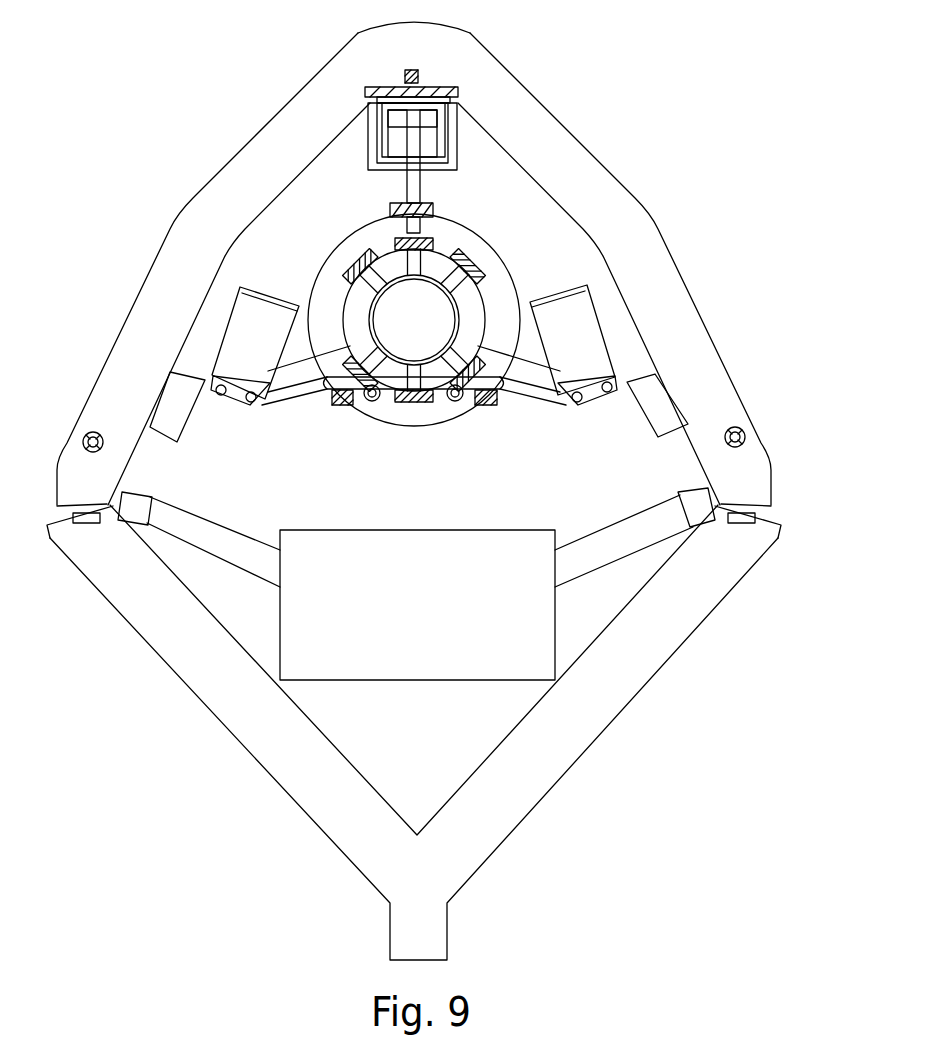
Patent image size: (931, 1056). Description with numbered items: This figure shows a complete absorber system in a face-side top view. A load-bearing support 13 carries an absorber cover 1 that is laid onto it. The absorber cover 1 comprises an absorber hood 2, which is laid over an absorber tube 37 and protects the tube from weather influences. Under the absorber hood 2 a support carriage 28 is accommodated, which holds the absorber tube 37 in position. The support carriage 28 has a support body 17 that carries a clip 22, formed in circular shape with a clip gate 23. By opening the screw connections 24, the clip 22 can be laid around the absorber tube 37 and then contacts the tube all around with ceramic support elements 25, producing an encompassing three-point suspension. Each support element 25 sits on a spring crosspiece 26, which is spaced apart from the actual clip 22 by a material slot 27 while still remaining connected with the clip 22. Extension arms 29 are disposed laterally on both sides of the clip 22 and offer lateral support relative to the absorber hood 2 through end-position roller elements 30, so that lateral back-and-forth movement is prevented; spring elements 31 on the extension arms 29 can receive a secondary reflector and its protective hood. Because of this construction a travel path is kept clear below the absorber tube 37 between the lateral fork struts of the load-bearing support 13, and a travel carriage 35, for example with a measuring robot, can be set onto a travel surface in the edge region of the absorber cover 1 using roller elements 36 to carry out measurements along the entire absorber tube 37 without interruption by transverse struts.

The absorber cover 1 is at (677, 295).
The absorber hood 2 is at (555, 213).
The load-bearing support 13 is at (520, 747).
The support body 17 is at (395, 207).
The clip 22 is at (345, 274).
The clip gate 23 is at (407, 425).
The screw connections 24 is at (484, 410).
The support elements 25 is at (472, 297).
The spring crosspiece 26 is at (463, 306).
The material slot 27 is at (487, 252).
The support carriage 28 is at (330, 410).
The extension arms 29 is at (612, 412).
The end-position roller elements 30 is at (680, 390).
The spring elements 31 is at (585, 310).
The travel carriage 35 is at (545, 648).
The roller elements 36 is at (719, 500).
The absorber tube 37 is at (198, 372).